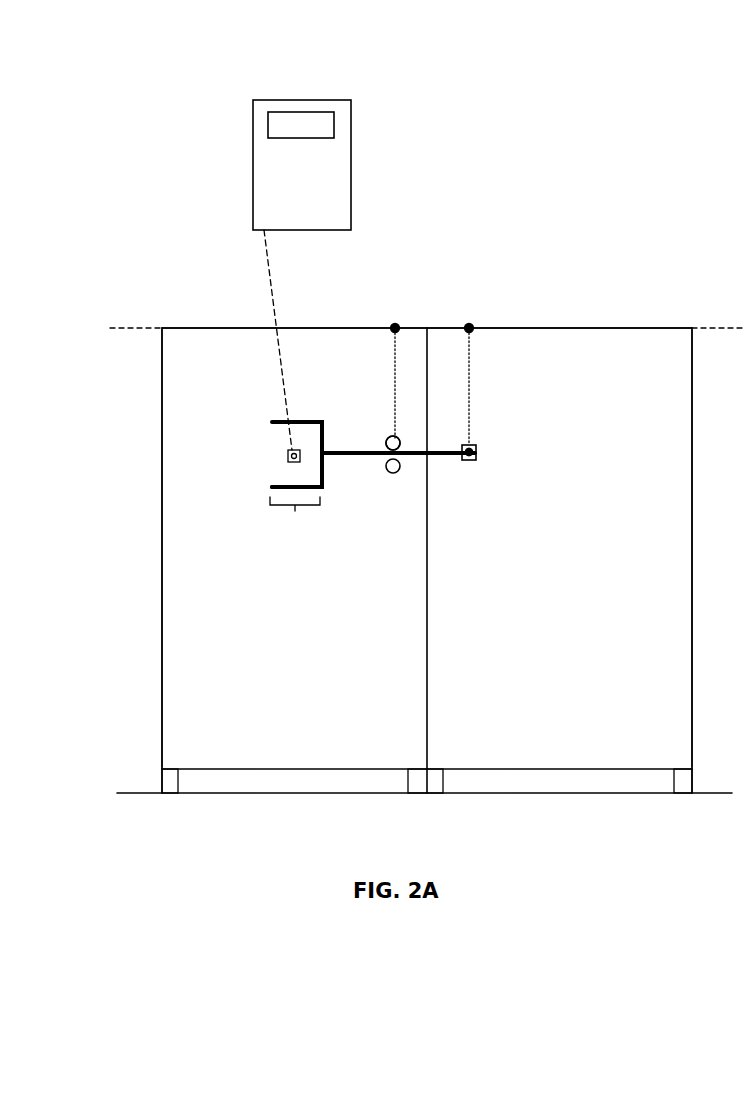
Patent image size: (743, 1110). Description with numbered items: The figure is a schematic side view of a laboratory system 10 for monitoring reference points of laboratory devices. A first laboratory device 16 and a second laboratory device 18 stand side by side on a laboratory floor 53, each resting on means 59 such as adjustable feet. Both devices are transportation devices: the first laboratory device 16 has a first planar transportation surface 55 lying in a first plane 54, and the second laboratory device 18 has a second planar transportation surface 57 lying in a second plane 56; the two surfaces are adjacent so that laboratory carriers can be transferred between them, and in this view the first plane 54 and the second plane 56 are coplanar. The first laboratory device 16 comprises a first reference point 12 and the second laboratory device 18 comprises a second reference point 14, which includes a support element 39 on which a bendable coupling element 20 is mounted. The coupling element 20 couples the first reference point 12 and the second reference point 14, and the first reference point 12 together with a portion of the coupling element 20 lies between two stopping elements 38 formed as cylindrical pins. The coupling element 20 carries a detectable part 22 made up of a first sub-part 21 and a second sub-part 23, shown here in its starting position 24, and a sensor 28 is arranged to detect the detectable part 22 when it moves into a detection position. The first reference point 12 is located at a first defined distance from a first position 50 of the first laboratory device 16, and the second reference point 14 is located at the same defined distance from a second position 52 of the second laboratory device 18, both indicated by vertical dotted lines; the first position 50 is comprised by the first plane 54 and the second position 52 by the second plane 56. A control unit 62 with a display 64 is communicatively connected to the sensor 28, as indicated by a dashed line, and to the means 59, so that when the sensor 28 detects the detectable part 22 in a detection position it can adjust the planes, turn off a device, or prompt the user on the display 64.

The laboratory system 10 is at (158, 140).
The first reference point 12 is at (398, 441).
The second reference point 14 is at (476, 452).
The first laboratory device 16 is at (170, 600).
The second laboratory device 18 is at (668, 553).
The coupling element 20 is at (347, 450).
The first sub-part 21 is at (280, 487).
The detectable part 22 is at (295, 520).
The second sub-part 23 is at (299, 421).
The starting position 24 is at (272, 456).
The sensor 28 is at (289, 448).
The stopping elements 38 is at (391, 440).
The support element 39 is at (470, 447).
The first position 50 is at (395, 324).
The second position 52 is at (470, 325).
The laboratory floor 53 is at (515, 793).
The first plane 54 is at (150, 328).
The first planar transportation surface 55 is at (206, 328).
The second plane 56 is at (722, 328).
The second planar transportation surface 57 is at (598, 328).
The means for adjusting 59 is at (683, 778).
The control unit 62 is at (272, 207).
The display 64 is at (287, 125).